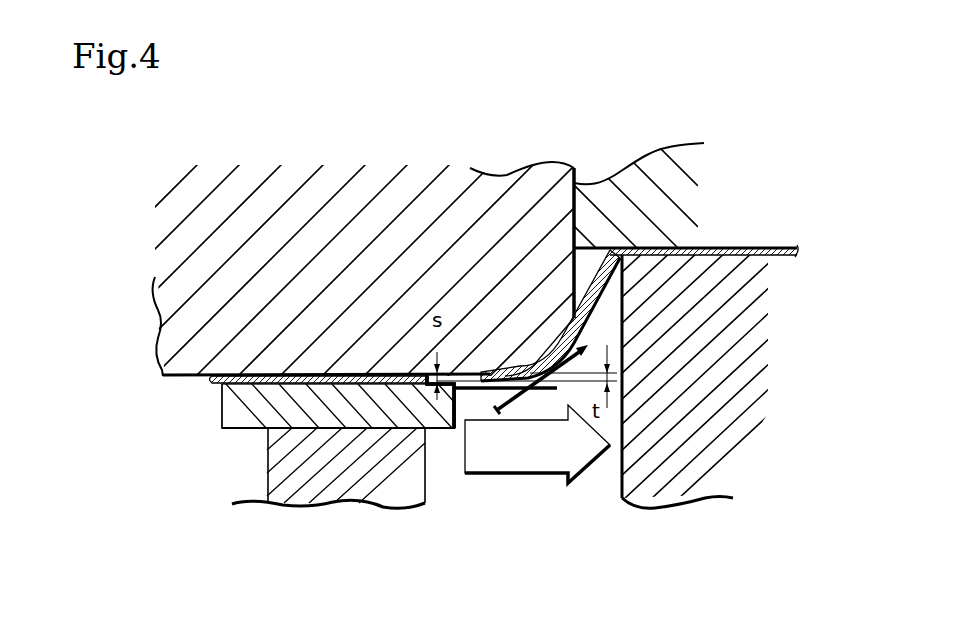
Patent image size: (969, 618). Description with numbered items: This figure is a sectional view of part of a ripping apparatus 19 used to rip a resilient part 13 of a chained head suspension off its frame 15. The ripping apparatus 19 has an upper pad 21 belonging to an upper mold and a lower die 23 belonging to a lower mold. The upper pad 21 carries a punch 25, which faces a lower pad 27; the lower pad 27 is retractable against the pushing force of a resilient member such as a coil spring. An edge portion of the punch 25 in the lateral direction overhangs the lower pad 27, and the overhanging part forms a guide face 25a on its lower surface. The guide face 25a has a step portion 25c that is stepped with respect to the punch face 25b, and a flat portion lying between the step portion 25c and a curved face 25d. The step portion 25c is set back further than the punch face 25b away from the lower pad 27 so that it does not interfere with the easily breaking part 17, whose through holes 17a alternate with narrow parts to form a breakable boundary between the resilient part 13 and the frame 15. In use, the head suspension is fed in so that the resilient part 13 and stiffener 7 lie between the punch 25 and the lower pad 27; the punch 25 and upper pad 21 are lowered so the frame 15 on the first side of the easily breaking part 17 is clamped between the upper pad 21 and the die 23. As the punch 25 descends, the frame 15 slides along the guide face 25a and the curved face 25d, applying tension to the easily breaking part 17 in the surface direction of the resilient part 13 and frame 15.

The stiffener 7 is at (238, 418).
The resilient part 13 is at (222, 390).
The frame 15 is at (700, 243).
The easily breaking part 17 is at (440, 400).
The through hole 17a is at (427, 368).
The ripping apparatus 19 is at (602, 128).
The upper pad 21 is at (680, 157).
The lower die 23 is at (687, 477).
The punch 25 is at (538, 177).
The guide face 25a is at (509, 402).
The punch face 25b is at (208, 378).
The step portion 25c is at (468, 388).
The curved face 25d is at (583, 336).
The lower pad 27 is at (323, 487).